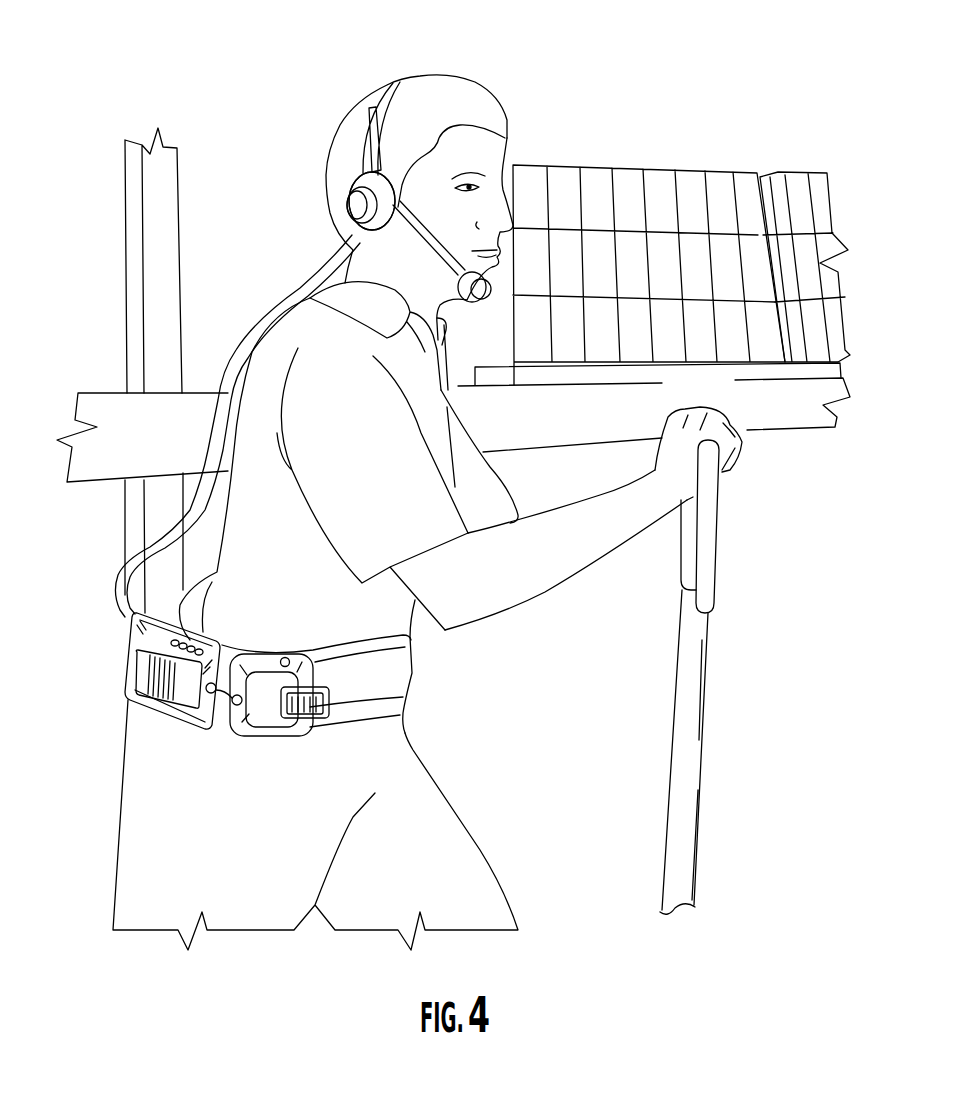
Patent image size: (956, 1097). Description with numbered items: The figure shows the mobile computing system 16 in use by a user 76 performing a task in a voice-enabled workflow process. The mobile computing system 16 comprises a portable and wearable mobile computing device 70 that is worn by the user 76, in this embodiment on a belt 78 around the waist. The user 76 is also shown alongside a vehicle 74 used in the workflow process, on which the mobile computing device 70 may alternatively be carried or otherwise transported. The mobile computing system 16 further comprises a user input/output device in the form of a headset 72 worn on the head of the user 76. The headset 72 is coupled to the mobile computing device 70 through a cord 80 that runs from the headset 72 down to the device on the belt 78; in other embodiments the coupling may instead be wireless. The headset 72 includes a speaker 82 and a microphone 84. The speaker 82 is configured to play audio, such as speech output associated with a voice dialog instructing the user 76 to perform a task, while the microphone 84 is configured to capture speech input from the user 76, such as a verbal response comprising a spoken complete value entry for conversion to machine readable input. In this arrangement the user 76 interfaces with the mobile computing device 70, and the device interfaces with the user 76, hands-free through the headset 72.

The mobile computing system 16 is at (250, 72).
The mobile computing device 70 is at (140, 710).
The headset 72 is at (362, 100).
The vehicle 74 is at (704, 728).
The user 76 is at (355, 442).
The belt 78 is at (410, 673).
The cord 80 is at (213, 450).
The speaker 82 is at (358, 177).
The microphone 84 is at (458, 288).